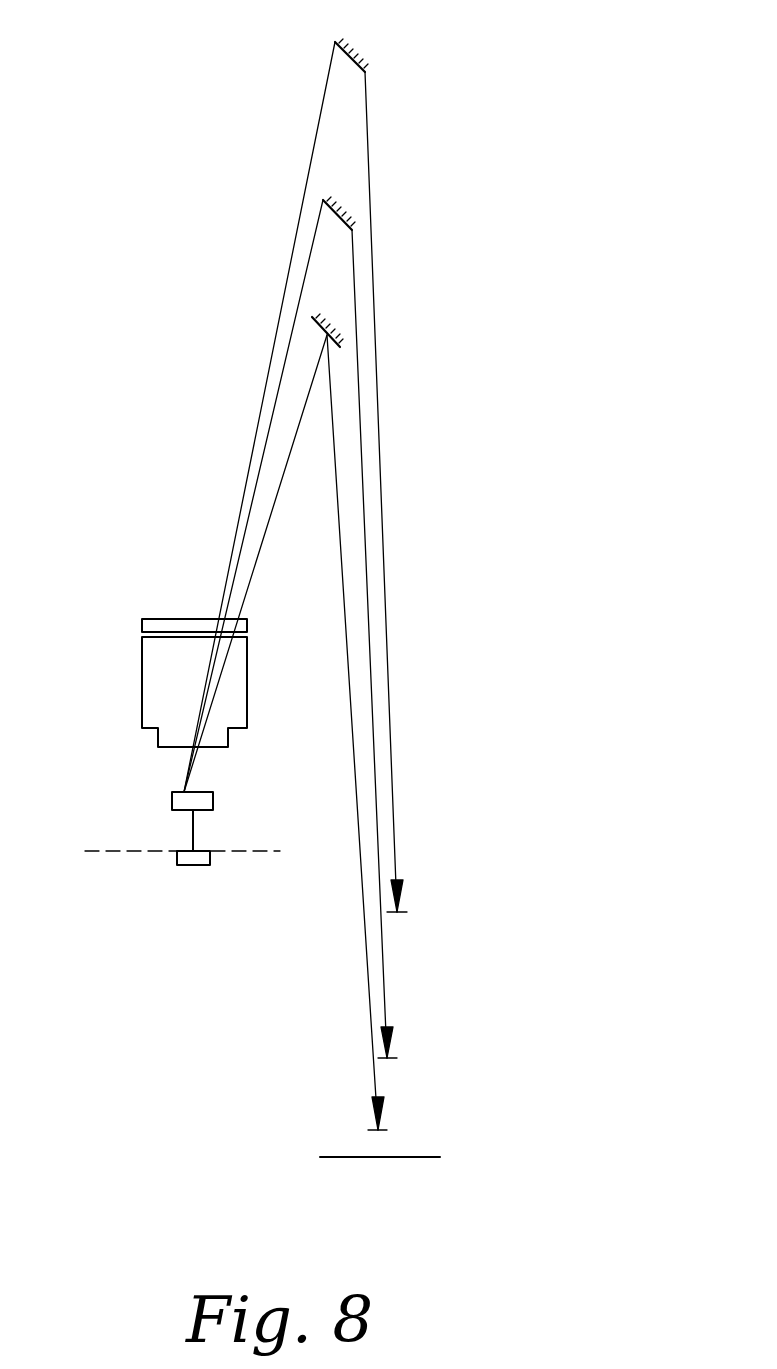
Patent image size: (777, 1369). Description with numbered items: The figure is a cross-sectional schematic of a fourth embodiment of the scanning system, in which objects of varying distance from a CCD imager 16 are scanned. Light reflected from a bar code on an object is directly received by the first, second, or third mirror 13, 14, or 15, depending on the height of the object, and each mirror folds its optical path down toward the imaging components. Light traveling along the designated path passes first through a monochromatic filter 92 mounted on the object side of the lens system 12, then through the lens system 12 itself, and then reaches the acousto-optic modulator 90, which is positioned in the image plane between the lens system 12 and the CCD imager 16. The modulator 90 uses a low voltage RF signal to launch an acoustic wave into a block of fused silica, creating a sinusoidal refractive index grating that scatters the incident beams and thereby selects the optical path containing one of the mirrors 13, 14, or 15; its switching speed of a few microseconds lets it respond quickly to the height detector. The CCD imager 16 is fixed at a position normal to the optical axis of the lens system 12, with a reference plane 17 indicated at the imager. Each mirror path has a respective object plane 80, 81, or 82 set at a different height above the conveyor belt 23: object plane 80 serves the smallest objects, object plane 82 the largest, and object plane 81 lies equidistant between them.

The first mirror 13 is at (363, 66).
The second mirror 14 is at (352, 226).
The third mirror 15 is at (328, 335).
The monochromatic filter 92 is at (173, 618).
The lens system 12 is at (152, 690).
The acousto-optic modulator 90 is at (213, 792).
The CCD imager 16 is at (183, 849).
The reference plane 17 is at (127, 851).
The object plane 82 is at (407, 912).
The object plane 81 is at (397, 1058).
The object plane 80 is at (387, 1130).
The conveyor belt 23 is at (338, 1157).